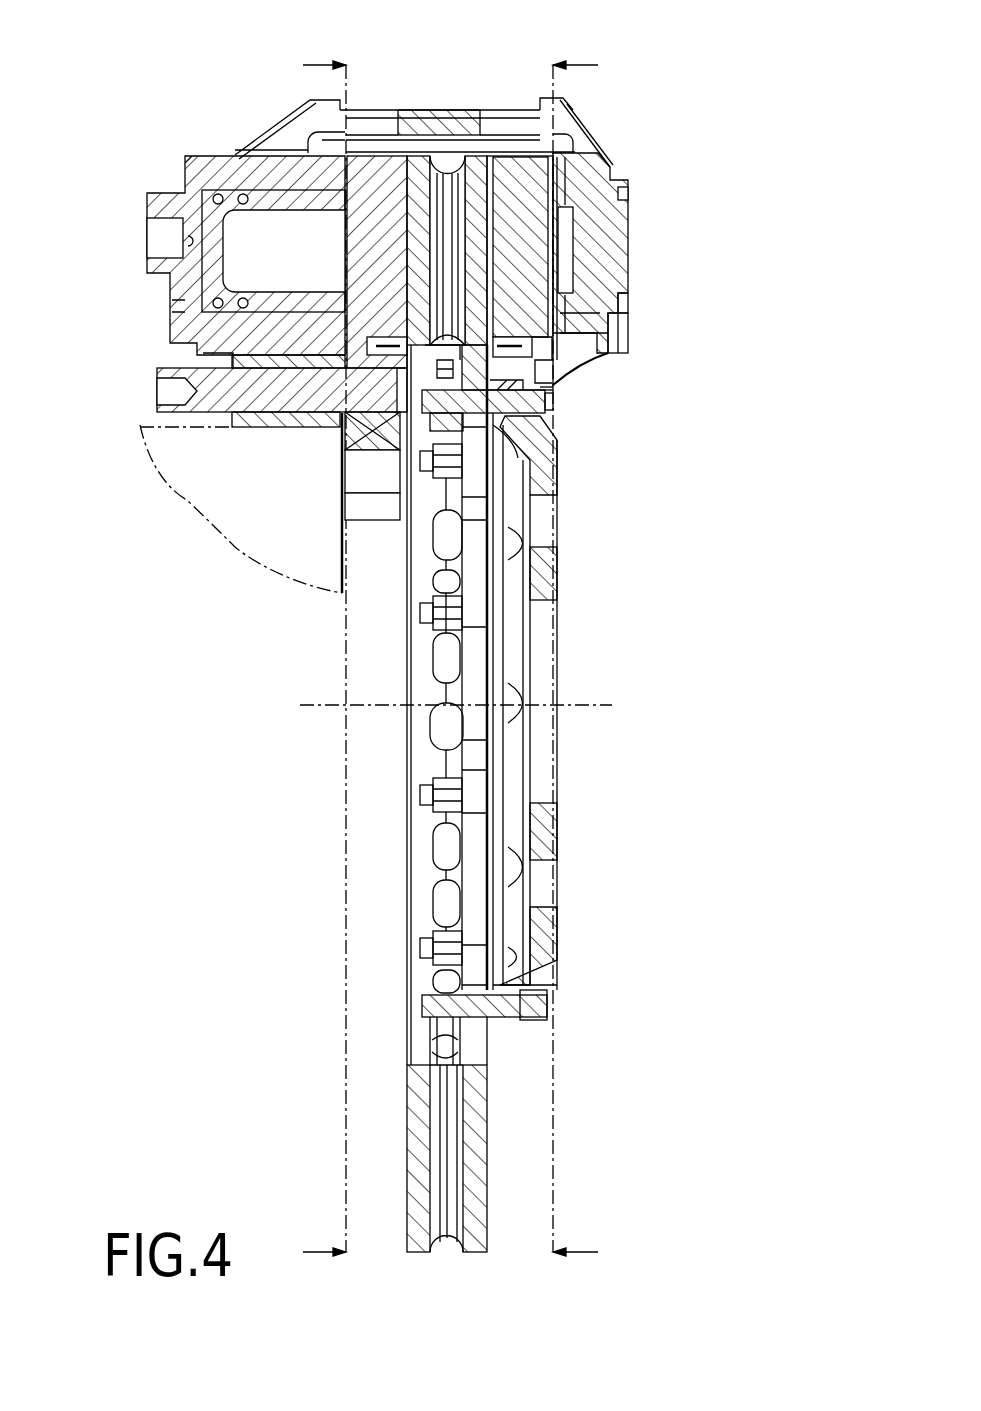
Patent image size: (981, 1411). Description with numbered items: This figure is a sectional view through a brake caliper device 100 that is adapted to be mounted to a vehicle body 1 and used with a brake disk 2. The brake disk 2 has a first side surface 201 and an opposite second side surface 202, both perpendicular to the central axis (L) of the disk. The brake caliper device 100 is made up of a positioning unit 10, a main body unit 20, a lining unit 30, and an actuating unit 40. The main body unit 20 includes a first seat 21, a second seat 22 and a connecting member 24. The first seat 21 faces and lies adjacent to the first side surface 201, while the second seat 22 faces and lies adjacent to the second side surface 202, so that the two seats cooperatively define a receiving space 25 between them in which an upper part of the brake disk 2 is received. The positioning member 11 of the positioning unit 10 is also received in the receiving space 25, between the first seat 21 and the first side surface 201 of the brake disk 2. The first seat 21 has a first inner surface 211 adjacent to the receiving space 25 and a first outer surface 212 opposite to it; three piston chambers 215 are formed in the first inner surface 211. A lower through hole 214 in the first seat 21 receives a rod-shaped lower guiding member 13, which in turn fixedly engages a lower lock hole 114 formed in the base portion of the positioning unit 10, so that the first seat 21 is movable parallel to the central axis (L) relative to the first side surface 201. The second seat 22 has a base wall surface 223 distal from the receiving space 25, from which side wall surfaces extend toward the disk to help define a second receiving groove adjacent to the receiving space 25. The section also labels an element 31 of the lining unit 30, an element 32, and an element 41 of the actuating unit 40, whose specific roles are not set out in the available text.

The brake caliper device 100 is at (371, 638).
The vehicle body 1 is at (244, 490).
The brake disk 2 is at (456, 803).
The positioning unit 10 is at (322, 531).
The positioning member 11 is at (322, 531).
The lower guiding member 13 is at (165, 368).
The main body unit 20 is at (192, 272).
The first seat 21 is at (192, 272).
The second seat 22 is at (620, 267).
The connecting member 24 is at (477, 112).
The receiving space 25 is at (427, 150).
The lining unit 30 is at (386, 197).
The rotor core 31 is at (372, 162).
The bearing 32 is at (497, 214).
The actuating unit 40 is at (251, 177).
The bearing ring 41 is at (228, 190).
The lower lock hole 114 is at (388, 450).
The first side surface 201 is at (410, 1100).
The second side surface 202 is at (487, 1103).
The first inner surface 211 is at (290, 113).
The first outer surface 212 is at (185, 170).
The lower through hole 214 is at (260, 430).
The piston chambers 215 is at (148, 207).
The base wall surface 223 is at (556, 303).